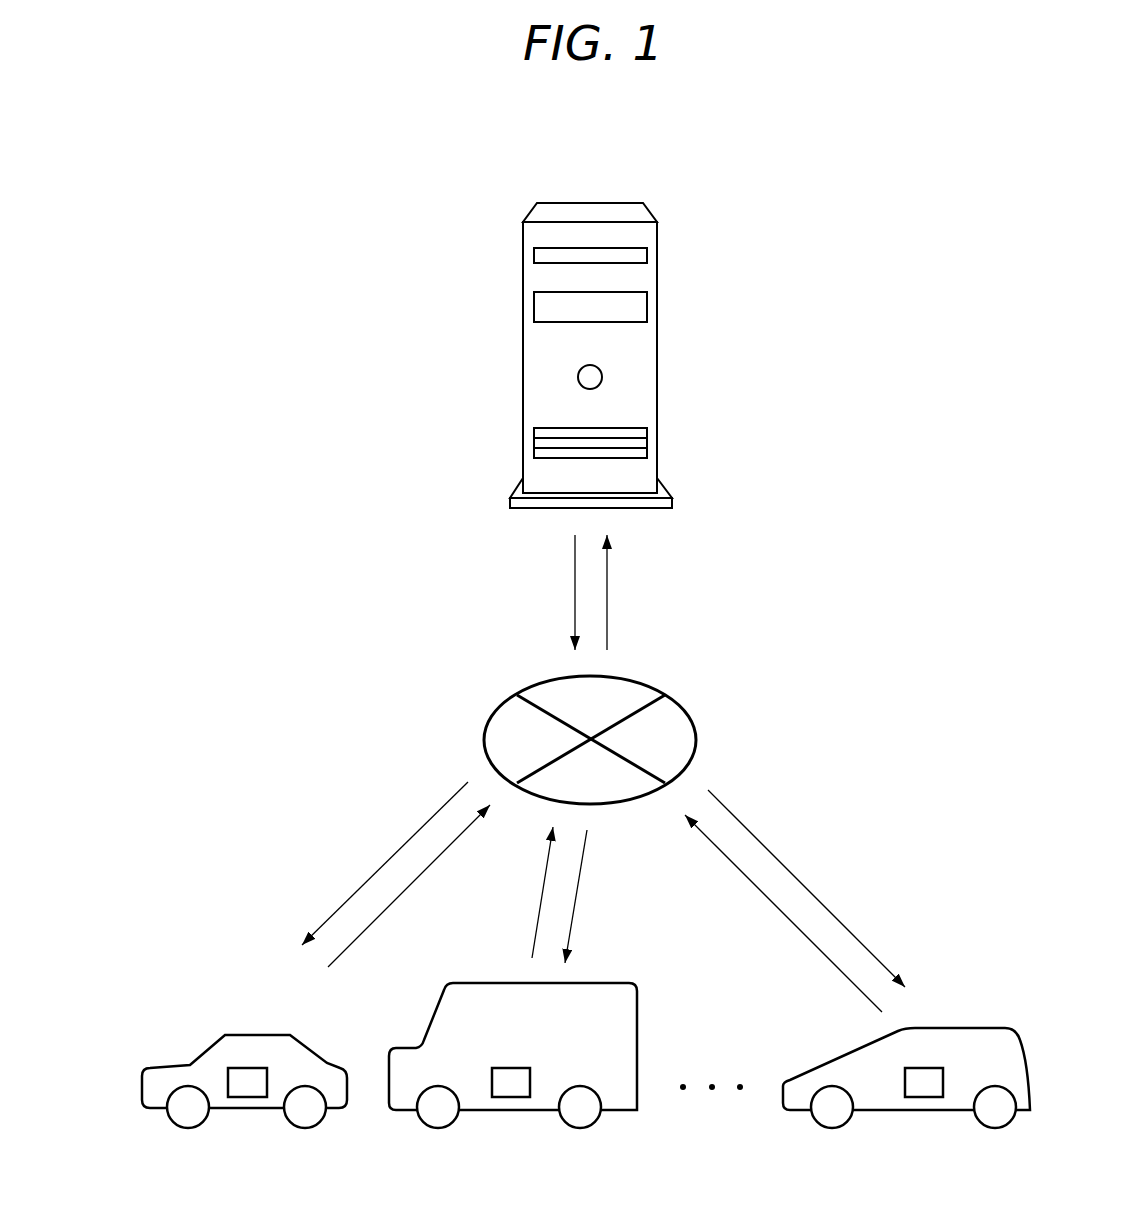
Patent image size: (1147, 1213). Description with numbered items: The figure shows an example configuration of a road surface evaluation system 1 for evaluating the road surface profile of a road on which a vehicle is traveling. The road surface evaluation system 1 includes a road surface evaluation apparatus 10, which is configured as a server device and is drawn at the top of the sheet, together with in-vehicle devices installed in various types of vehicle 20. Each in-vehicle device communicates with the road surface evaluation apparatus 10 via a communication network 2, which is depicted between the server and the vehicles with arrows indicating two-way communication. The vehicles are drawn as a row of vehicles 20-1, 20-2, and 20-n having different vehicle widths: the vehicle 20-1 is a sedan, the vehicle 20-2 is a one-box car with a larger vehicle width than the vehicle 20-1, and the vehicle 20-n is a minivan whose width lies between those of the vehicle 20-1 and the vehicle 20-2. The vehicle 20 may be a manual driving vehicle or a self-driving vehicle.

The road surface evaluation system 1 is at (845, 260).
The communication network 2 is at (678, 702).
The road surface evaluation apparatus 10 is at (617, 203).
The vehicle 20 is at (590, 1041).
The vehicle 20-1 is at (244, 1068).
The vehicle 20-2 is at (533, 1041).
The vehicle 20-n is at (910, 1055).